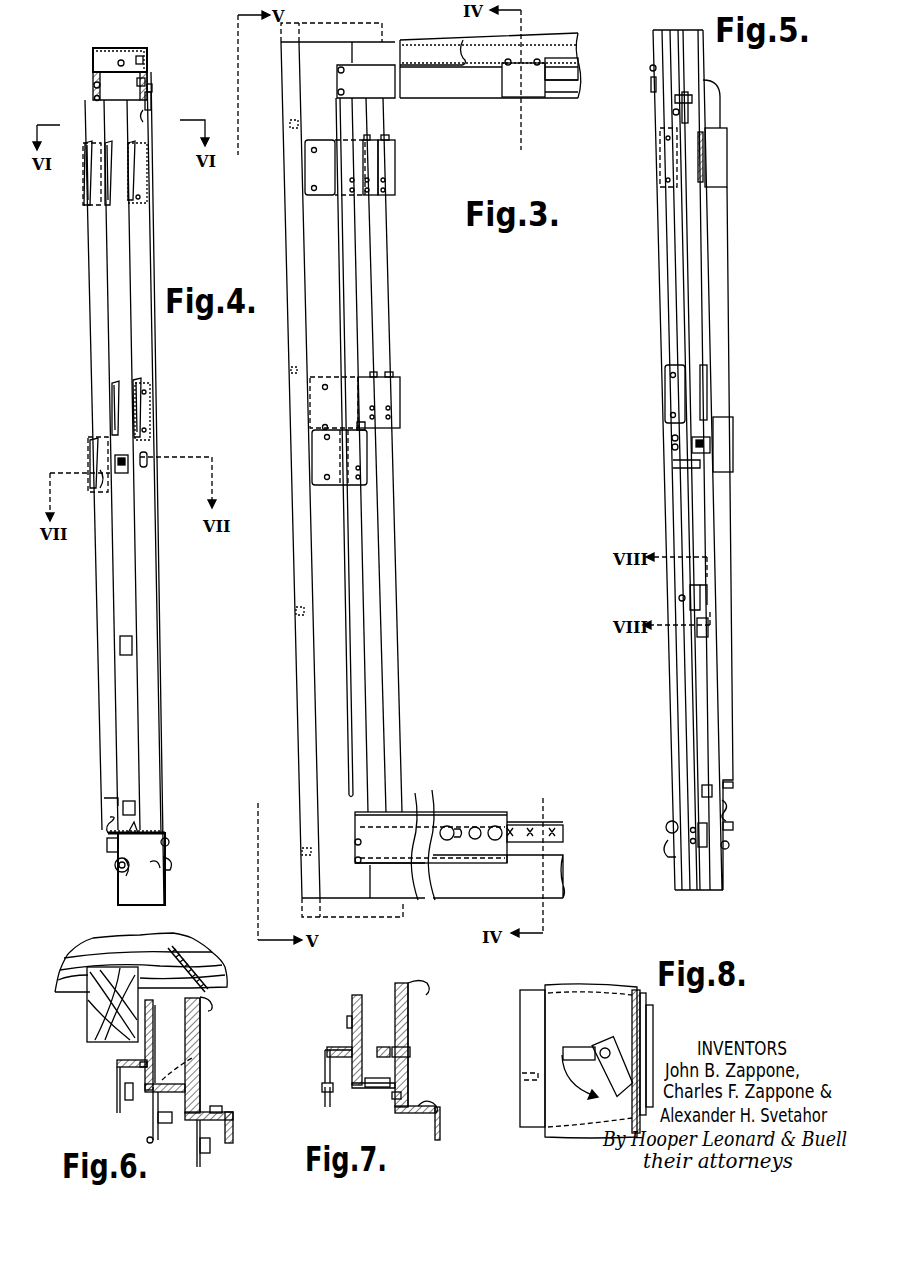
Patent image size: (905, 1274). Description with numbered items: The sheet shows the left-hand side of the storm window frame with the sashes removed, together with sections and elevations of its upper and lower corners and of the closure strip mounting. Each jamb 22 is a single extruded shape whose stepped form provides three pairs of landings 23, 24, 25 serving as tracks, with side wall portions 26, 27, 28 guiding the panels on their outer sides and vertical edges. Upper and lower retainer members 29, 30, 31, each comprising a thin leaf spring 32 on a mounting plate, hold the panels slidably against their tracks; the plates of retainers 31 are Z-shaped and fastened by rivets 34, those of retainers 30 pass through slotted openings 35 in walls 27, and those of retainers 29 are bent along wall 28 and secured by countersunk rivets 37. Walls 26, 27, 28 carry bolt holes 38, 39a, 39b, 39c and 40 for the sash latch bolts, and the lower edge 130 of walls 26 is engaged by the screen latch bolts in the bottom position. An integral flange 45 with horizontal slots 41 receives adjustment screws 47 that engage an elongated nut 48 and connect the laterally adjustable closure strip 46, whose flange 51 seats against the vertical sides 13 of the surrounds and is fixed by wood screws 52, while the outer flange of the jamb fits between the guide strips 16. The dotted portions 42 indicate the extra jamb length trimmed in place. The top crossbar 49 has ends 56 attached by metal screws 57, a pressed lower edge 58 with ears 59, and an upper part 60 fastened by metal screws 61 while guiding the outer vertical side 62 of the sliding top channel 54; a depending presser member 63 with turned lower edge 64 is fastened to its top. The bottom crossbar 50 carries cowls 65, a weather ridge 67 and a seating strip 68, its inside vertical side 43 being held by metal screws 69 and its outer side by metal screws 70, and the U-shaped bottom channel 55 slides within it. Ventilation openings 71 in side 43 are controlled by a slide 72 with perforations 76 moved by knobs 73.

In FIG. 6, the sides 13 is at (192, 956).
In FIG. 6, the guide strips 16 is at (90, 1008).
In FIG. 3, the jambs 22 is at (392, 290).
In FIG. 3, the landings 23 is at (352, 215).
In FIG. 7, the landings 23 is at (357, 1073).
In FIG. 3, the landings 24 is at (365, 233).
In FIG. 7, the landings 24 is at (402, 1097).
In FIG. 3, the landings 25 is at (385, 257).
In FIG. 7, the landings 25 is at (438, 1137).
In FIG. 4, the side wall portions 26 is at (95, 255).
In FIG. 6, the side wall portions 26 is at (147, 1065).
In FIG. 4, the side wall portions 27 is at (118, 283).
In FIG. 6, the side wall portions 27 is at (160, 1093).
In FIG. 4, the side wall portions 28 is at (140, 310).
In FIG. 6, the side wall portions 28 is at (233, 1125).
In FIG. 4, the retainer members 29 is at (142, 165).
In FIG. 3, the retainer members 29 is at (392, 165).
In FIG. 5, the retainer members 29 is at (665, 175).
In FIG. 6, the retainer members 29 is at (200, 1168).
In FIG. 4, the retainer members 30 is at (110, 170).
In FIG. 3, the retainer members 30 is at (372, 153).
In FIG. 5, the retainer members 30 is at (698, 158).
In FIG. 6, the retainer members 30 is at (153, 1138).
In FIG. 4, the retainer members 31 is at (92, 165).
In FIG. 3, the retainer members 31 is at (340, 163).
In FIG. 5, the retainer members 31 is at (724, 152).
In FIG. 6, the retainer members 31 is at (118, 1072).
In FIG. 7, the retainer members 31 is at (323, 1102).
In FIG. 4, the leaf spring 32 is at (140, 378).
In FIG. 3, the leaf spring 32 is at (385, 135).
In FIG. 6, the leaf spring 32 is at (125, 1092).
In FIG. 7, the leaf spring 32 is at (333, 1100).
In FIG. 6, the rivets 34 is at (143, 1033).
In FIG. 7, the rivets 34 is at (350, 1022).
In FIG. 6, the slotted openings 35 is at (200, 1066).
In FIG. 6, the rivets 37 is at (213, 1107).
In FIG. 4, the bolt holes 38 is at (100, 487).
In FIG. 7, the bolt holes 38 is at (343, 1053).
In FIG. 4, the bolt holes 39a is at (128, 800).
In FIG. 5, the bolt holes 39a is at (707, 788).
In FIG. 4, the bolt holes 39b is at (122, 645).
In FIG. 5, the bolt holes 39b is at (705, 630).
In FIG. 4, the bolt holes 39c is at (122, 473).
In FIG. 5, the bolt holes 39c is at (703, 448).
In FIG. 7, the bolt holes 39c is at (378, 1088).
In FIG. 4, the bolt holes 40 is at (147, 456).
In FIG. 5, the bolt holes 40 is at (672, 443).
In FIG. 7, the bolt holes 40 is at (438, 1113).
In FIG. 7, the horizontal slots 41 is at (387, 1017).
In FIG. 8, the horizontal slots 41 is at (577, 1050).
In FIG. 3, the dotted portions 42 is at (358, 26).
In FIG. 4, the inside vertical side 43 is at (122, 872).
In FIG. 6, the flange 45 is at (181, 1043).
In FIG. 7, the flange 45 is at (397, 1020).
In FIG. 8, the flange 45 is at (578, 1003).
In FIG. 3, the closure strip 46 is at (300, 667).
In FIG. 5, the closure strip 46 is at (690, 683).
In FIG. 6, the closure strip 46 is at (200, 1023).
In FIG. 7, the closure strip 46 is at (408, 1008).
In FIG. 8, the closure strip 46 is at (530, 1017).
In FIG. 5, the adjustment screws 47 is at (675, 105).
In FIG. 7, the adjustment screws 47 is at (412, 1052).
In FIG. 5, the elongated nut 48 is at (700, 115).
In FIG. 7, the elongated nut 48 is at (390, 1048).
In FIG. 8, the elongated nut 48 is at (625, 1062).
In FIG. 3, the top crossbar 49 is at (425, 88).
In FIG. 4, the bottom crossbar 50 is at (150, 830).
In FIG. 3, the bottom crossbar 50 is at (432, 812).
In FIG. 6, the flange 51 is at (230, 992).
In FIG. 7, the flange 51 is at (424, 990).
In FIG. 6, the wood screws 52 is at (213, 1002).
In FIG. 4, the top channel 54 is at (95, 50).
In FIG. 3, the top channel 54 is at (420, 45).
In FIG. 4, the bottom channel 55 is at (130, 905).
In FIG. 3, the bottom channel 55 is at (475, 888).
In FIG. 4, the ends 56 is at (95, 84).
In FIG. 4, the metal screws 57 is at (95, 98).
In FIG. 4, the lower edge 58 is at (146, 112).
In FIG. 3, the lower edge 58 is at (570, 90).
In FIG. 4, the ear 59 is at (151, 100).
In FIG. 4, the upper part 60 is at (141, 82).
In FIG. 3, the upper part 60 is at (565, 72).
In FIG. 4, the metal screws 61 is at (150, 88).
In FIG. 5, the metal screws 61 is at (652, 70).
In FIG. 4, the outer vertical side 62 is at (140, 62).
In FIG. 4, the presser member 63 is at (122, 66).
In FIG. 3, the presser member 63 is at (515, 85).
In FIG. 4, the lower edge 64 is at (118, 100).
In FIG. 3, the lower edge 64 is at (533, 85).
In FIG. 4, the cowls 65 is at (171, 865).
In FIG. 5, the cowls 65 is at (672, 850).
In FIG. 4, the weather ridge 67 is at (135, 822).
In FIG. 4, the seating strip 68 is at (108, 822).
In FIG. 5, the seating strip 68 is at (730, 805).
In FIG. 4, the metal screws 69 is at (118, 866).
In FIG. 3, the metal screws 69 is at (356, 858).
In FIG. 5, the metal screws 69 is at (730, 845).
In FIG. 4, the metal screws 70 is at (169, 842).
In FIG. 5, the metal screws 70 is at (668, 828).
In FIG. 3, the ventilation openings 71 is at (487, 830).
In FIG. 4, the slide 72 is at (158, 868).
In FIG. 3, the slide 72 is at (564, 832).
In FIG. 4, the knobs 73 is at (107, 845).
In FIG. 3, the knobs 73 is at (452, 830).
In FIG. 5, the knobs 73 is at (735, 828).
In FIG. 3, the perforations 76 is at (556, 824).
In FIG. 4, the lower edge 130 is at (118, 803).
In FIG. 5, the lower edge 130 is at (728, 790).